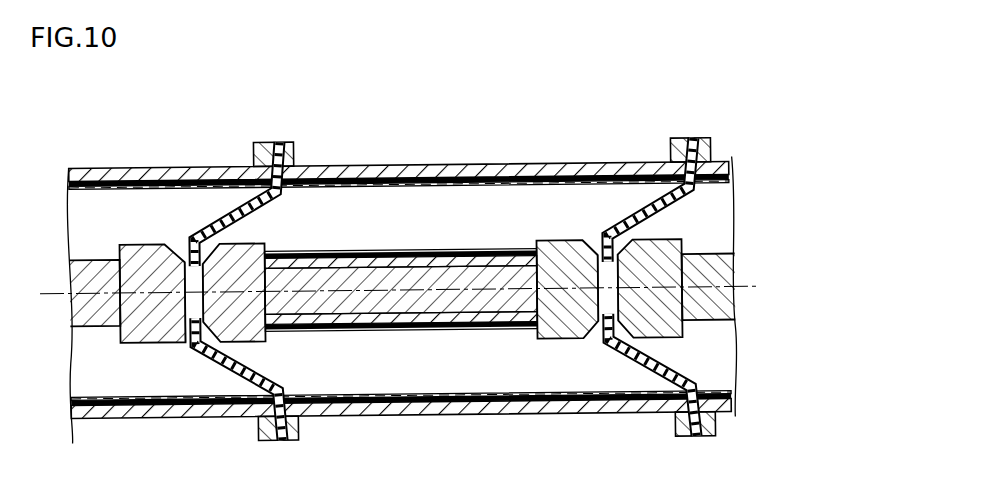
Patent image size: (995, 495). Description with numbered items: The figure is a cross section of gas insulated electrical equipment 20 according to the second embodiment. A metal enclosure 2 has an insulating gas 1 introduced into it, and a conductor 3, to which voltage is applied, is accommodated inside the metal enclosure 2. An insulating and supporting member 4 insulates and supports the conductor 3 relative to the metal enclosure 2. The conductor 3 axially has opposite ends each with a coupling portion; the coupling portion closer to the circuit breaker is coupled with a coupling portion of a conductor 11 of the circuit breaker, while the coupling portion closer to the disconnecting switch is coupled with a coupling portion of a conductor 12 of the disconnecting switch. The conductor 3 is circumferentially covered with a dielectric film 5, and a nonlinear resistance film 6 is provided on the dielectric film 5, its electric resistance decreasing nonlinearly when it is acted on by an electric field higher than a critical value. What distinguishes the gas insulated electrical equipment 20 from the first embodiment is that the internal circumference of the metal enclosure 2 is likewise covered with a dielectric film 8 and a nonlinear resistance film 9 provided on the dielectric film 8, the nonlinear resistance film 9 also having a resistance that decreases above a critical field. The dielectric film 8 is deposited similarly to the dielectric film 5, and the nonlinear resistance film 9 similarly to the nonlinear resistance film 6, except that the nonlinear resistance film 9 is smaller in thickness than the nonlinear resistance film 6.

The gas insulated electrical equipment 20 is at (634, 113).
The insulating gas 1 is at (536, 206).
The metal enclosure 2 is at (445, 409).
The conductor 3 is at (371, 284).
The insulating and supporting member 4 is at (242, 380).
The dielectric film 5 is at (405, 259).
The nonlinear resistance film 6 is at (463, 249).
The dielectric film 8 is at (369, 405).
The nonlinear resistance film 9 is at (497, 398).
The conductor of the circuit breaker 11 is at (92, 333).
The conductor of the disconnecting switch 12 is at (713, 320).